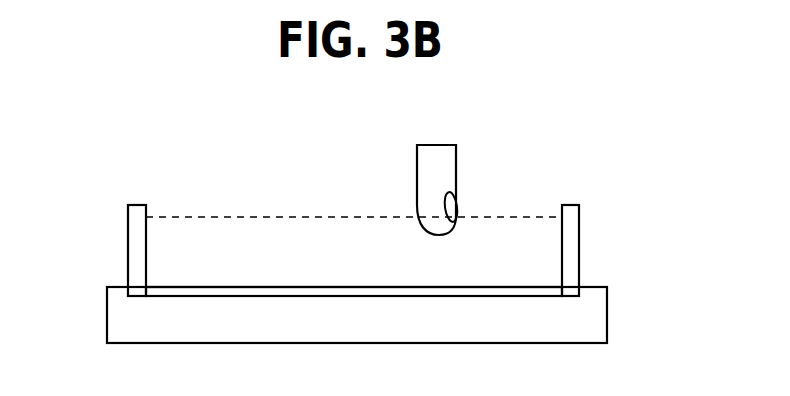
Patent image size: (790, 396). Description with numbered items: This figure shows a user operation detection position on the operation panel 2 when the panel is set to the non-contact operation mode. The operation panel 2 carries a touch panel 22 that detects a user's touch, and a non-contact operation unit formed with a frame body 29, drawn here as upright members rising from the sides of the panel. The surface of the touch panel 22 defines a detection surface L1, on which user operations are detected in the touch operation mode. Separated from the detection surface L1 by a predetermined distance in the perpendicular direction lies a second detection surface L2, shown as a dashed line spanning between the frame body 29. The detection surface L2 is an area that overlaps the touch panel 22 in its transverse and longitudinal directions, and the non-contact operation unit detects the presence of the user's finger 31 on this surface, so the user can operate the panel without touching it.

The operation panel 2 is at (614, 319).
The touch panel 22 is at (417, 296).
The frame body 29 is at (128, 250).
The user's finger 31 is at (445, 153).
The detection surface L1 is at (538, 287).
The detection surface L2 is at (510, 216).